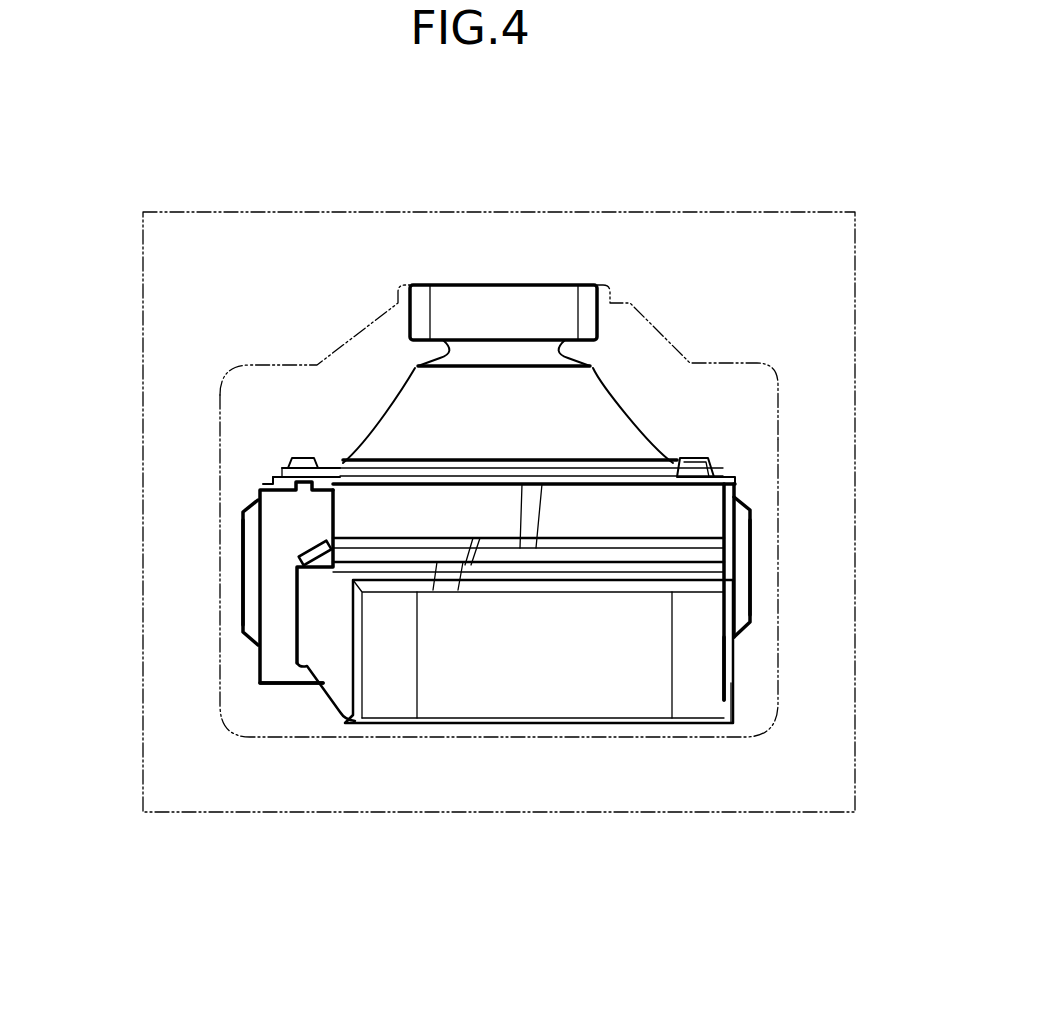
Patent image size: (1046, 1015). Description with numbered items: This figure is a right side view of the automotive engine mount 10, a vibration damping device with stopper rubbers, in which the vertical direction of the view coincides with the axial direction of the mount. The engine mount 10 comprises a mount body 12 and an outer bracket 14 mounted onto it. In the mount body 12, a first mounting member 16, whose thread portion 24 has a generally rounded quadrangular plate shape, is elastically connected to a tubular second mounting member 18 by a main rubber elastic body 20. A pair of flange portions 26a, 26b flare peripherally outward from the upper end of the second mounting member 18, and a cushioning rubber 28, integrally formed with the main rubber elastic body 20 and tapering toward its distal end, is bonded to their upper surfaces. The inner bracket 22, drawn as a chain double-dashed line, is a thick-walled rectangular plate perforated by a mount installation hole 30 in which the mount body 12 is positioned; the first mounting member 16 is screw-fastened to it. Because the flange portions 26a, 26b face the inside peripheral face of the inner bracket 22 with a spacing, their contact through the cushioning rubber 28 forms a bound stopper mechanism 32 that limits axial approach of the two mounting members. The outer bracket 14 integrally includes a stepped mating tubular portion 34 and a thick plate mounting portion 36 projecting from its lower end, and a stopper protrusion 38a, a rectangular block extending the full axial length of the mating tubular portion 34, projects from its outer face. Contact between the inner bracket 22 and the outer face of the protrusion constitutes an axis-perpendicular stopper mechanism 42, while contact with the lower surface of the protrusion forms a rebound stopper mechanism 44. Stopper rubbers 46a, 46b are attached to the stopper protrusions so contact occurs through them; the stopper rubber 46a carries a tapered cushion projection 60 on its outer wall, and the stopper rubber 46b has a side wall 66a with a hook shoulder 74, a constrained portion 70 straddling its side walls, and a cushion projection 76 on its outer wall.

The engine mount 10 is at (672, 423).
The mount body 12 is at (610, 393).
The outer bracket 14 is at (614, 723).
The first mounting member 16 is at (492, 286).
The second mounting member 18 is at (716, 470).
The main rubber elastic body 20 is at (432, 402).
The inner bracket 22 is at (193, 290).
The thread portion 24 is at (410, 318).
The flange portion 26a is at (722, 474).
The flange portion 26b is at (297, 482).
The cushioning rubber 28 is at (308, 462).
The mount installation hole 30 is at (225, 720).
The bound stopper mechanism 32 is at (285, 396).
The mating tubular portion 34 is at (418, 508).
The mounting portion 36 is at (516, 658).
The stopper protrusion 38a is at (697, 522).
The axis-perpendicular stopper mechanism 42 is at (767, 624).
The rebound stopper mechanism 44 is at (297, 711).
The stopper rubber 46a is at (758, 591).
The stopper rubber 46b is at (234, 587).
The cushion projection 60 is at (742, 540).
The side wall 66a is at (278, 643).
The constrained portion 70 is at (300, 492).
The hook shoulder 74 is at (312, 566).
The cushion projection 76 is at (248, 545).